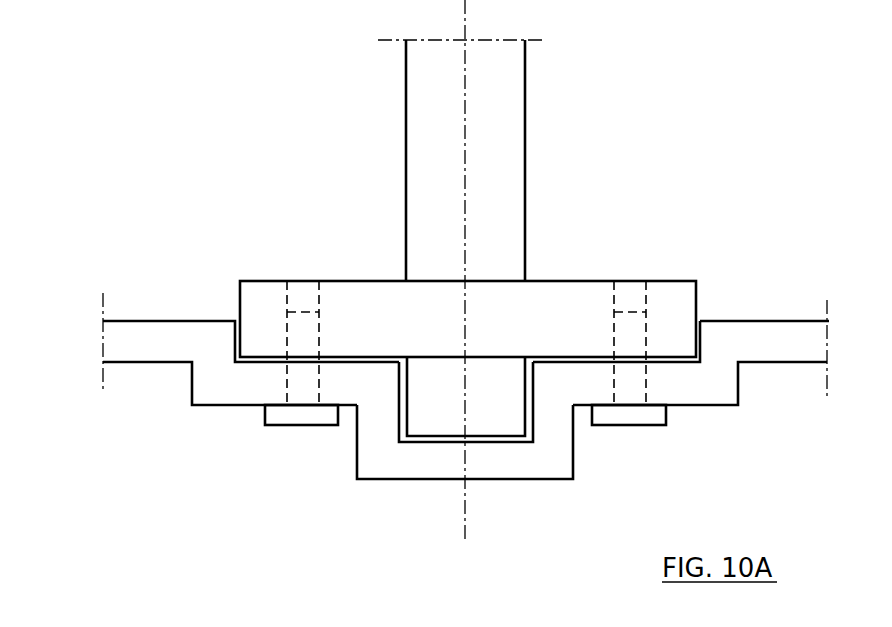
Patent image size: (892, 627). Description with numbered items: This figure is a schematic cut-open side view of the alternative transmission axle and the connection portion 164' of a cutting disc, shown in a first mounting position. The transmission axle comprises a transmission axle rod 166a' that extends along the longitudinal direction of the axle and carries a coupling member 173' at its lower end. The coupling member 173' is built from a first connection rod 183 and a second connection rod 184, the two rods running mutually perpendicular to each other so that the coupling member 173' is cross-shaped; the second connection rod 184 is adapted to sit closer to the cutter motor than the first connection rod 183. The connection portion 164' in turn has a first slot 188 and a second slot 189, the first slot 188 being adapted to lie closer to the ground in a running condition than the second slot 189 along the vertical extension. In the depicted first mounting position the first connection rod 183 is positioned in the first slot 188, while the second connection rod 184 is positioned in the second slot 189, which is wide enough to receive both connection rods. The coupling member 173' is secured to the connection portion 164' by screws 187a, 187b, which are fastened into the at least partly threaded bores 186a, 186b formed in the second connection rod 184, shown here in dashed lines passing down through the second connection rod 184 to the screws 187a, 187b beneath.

The transmission axle rod 166a' is at (376, 160).
The coupling member 173' is at (455, 327).
The connection portion 164' is at (434, 327).
The second connection rod 184 is at (494, 327).
The threaded bore 186a is at (302, 293).
The threaded bore 186b is at (629, 295).
The screw 187a is at (290, 417).
The screw 187b is at (638, 417).
The first slot 188 is at (452, 438).
The second slot 189 is at (660, 357).
The first connection rod 183 is at (500, 415).